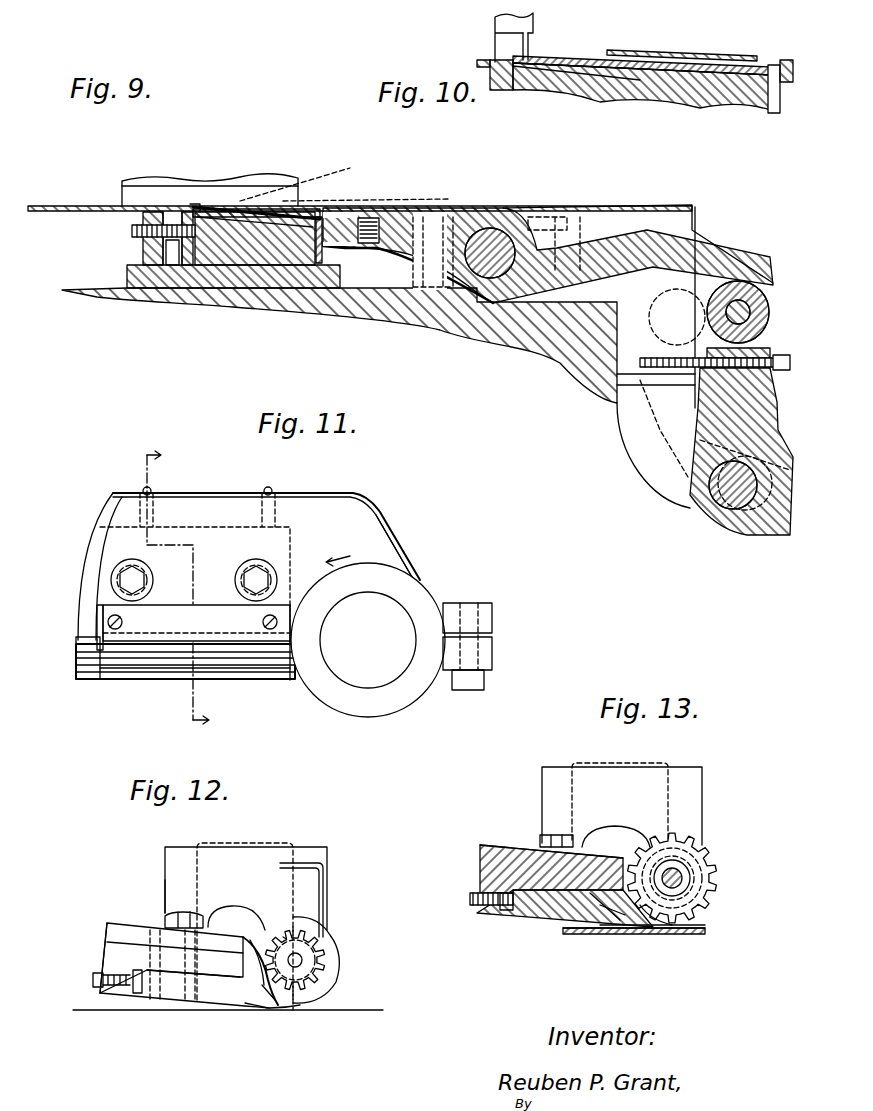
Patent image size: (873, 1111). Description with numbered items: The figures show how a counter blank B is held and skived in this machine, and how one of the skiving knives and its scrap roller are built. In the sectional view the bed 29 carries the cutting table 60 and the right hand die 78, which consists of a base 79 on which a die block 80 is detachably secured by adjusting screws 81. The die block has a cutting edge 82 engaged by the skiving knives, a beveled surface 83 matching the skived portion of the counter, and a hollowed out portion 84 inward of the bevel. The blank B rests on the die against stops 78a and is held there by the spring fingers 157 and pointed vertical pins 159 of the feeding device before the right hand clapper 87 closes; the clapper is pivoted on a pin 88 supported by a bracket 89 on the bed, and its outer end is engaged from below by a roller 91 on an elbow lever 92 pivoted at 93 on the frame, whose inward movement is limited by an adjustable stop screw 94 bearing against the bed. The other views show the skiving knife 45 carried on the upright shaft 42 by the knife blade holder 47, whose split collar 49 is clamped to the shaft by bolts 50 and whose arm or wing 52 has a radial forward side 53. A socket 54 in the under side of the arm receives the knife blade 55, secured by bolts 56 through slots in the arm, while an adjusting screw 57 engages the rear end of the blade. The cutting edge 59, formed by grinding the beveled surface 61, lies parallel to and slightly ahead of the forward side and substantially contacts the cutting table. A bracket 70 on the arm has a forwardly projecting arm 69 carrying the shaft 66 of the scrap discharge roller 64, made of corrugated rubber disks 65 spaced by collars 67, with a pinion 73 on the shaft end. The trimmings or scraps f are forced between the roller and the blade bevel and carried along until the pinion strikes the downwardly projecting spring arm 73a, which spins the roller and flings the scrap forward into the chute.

In FIG. 9, the bed 29 is at (100, 297).
In FIG. 11, the upright shaft 42 is at (368, 640).
In FIG. 12, the upright shaft 42 is at (245, 843).
In FIG. 13, the upright shaft 42 is at (618, 763).
In FIG. 11, the skiving knife 45 is at (275, 475).
In FIG. 12, the skiving knife 45 is at (149, 891).
In FIG. 11, the knife blade holder 47 is at (404, 546).
In FIG. 12, the knife blade holder 47 is at (113, 933).
In FIG. 13, the knife blade holder 47 is at (480, 868).
In FIG. 11, the split collar 49 is at (418, 585).
In FIG. 12, the split collar 49 is at (165, 856).
In FIG. 13, the split collar 49 is at (702, 778).
In FIG. 11, the bolt 50 is at (466, 690).
In FIG. 11, the arm or wing 52 is at (113, 502).
In FIG. 12, the arm or wing 52 is at (105, 955).
In FIG. 13, the arm or wing 52 is at (482, 846).
In FIG. 11, the radial forward side 53 is at (88, 660).
In FIG. 12, the radial forward side 53 is at (262, 950).
In FIG. 13, the radial forward side 53 is at (600, 905).
In FIG. 11, the socket 54 is at (215, 520).
In FIG. 12, the socket 54 is at (137, 995).
In FIG. 13, the socket 54 is at (510, 905).
In FIG. 9, the knife blade 55 is at (125, 187).
In FIG. 11, the knife blade 55 is at (150, 660).
In FIG. 12, the knife blade 55 is at (220, 995).
In FIG. 13, the knife blade 55 is at (528, 918).
In FIG. 11, the bolt 56 is at (125, 572).
In FIG. 12, the bolt 56 is at (170, 915).
In FIG. 13, the bolt 56 is at (548, 835).
In FIG. 11, the adjusting screw 57 is at (145, 489).
In FIG. 12, the adjusting screw 57 is at (96, 990).
In FIG. 13, the adjusting screw 57 is at (478, 900).
In FIG. 11, the cutting edge 59 is at (292, 668).
In FIG. 12, the cutting edge 59 is at (268, 1000).
In FIG. 13, the cutting edge 59 is at (655, 934).
In FIG. 9, the cutting table 60 is at (40, 205).
In FIG. 12, the cutting table 60 is at (350, 1012).
In FIG. 11, the beveled surface 61 is at (270, 670).
In FIG. 12, the beveled surface 61 is at (258, 992).
In FIG. 13, the beveled surface 61 is at (615, 934).
In FIG. 12, the scrap discharge roller 64 is at (328, 957).
In FIG. 13, the scrap discharge roller 64 is at (712, 878).
In FIG. 12, the disk 65 is at (340, 968).
In FIG. 13, the disk 65 is at (708, 907).
In FIG. 12, the shaft 66 is at (312, 975).
In FIG. 13, the shaft 66 is at (686, 882).
In FIG. 13, the collar 67 is at (685, 870).
In FIG. 11, the forwardly projecting arm 69 is at (97, 626).
In FIG. 12, the forwardly projecting arm 69 is at (300, 925).
In FIG. 13, the forwardly projecting arm 69 is at (642, 840).
In FIG. 11, the bracket 70 is at (196, 623).
In FIG. 12, the bracket 70 is at (240, 918).
In FIG. 13, the bracket 70 is at (597, 845).
In FIG. 12, the pinion 73 is at (310, 992).
In FIG. 12, the spring arm 73a is at (300, 863).
In FIG. 9, the right hand die 78 is at (143, 252).
In FIG. 10, the right hand die 78 is at (731, 110).
In FIG. 9, the stop 78a is at (320, 265).
In FIG. 10, the stop 78a is at (773, 113).
In FIG. 9, the base 79 is at (170, 280).
In FIG. 9, the die block 80 is at (265, 252).
In FIG. 10, the die block 80 is at (693, 103).
In FIG. 9, the adjusting screw 81 is at (132, 231).
In FIG. 9, the cutting edge 82 is at (200, 208).
In FIG. 10, the cutting edge 82 is at (490, 90).
In FIG. 9, the beveled surface 83 is at (220, 212).
In FIG. 10, the beveled surface 83 is at (540, 75).
In FIG. 10, the hollowed out portion 84 is at (655, 80).
In FIG. 9, the right hand clapper 87 is at (346, 206).
In FIG. 10, the right hand clapper 87 is at (670, 52).
In FIG. 9, the pin 88 is at (490, 278).
In FIG. 9, the bracket 89 is at (576, 207).
In FIG. 9, the roller 91 is at (770, 295).
In FIG. 9, the elbow lever 92 is at (697, 420).
In FIG. 9, the pivot 93 is at (733, 500).
In FIG. 9, the adjustable stop screw 94 is at (657, 368).
In FIG. 10, the spring finger 157 is at (495, 40).
In FIG. 10, the vertical pin 159 is at (530, 43).
In FIG. 9, the blank B is at (215, 212).
In FIG. 10, the blank B is at (594, 57).
In FIG. 12, the trimmings or scraps f is at (258, 990).
In FIG. 13, the trimmings or scraps f is at (610, 915).